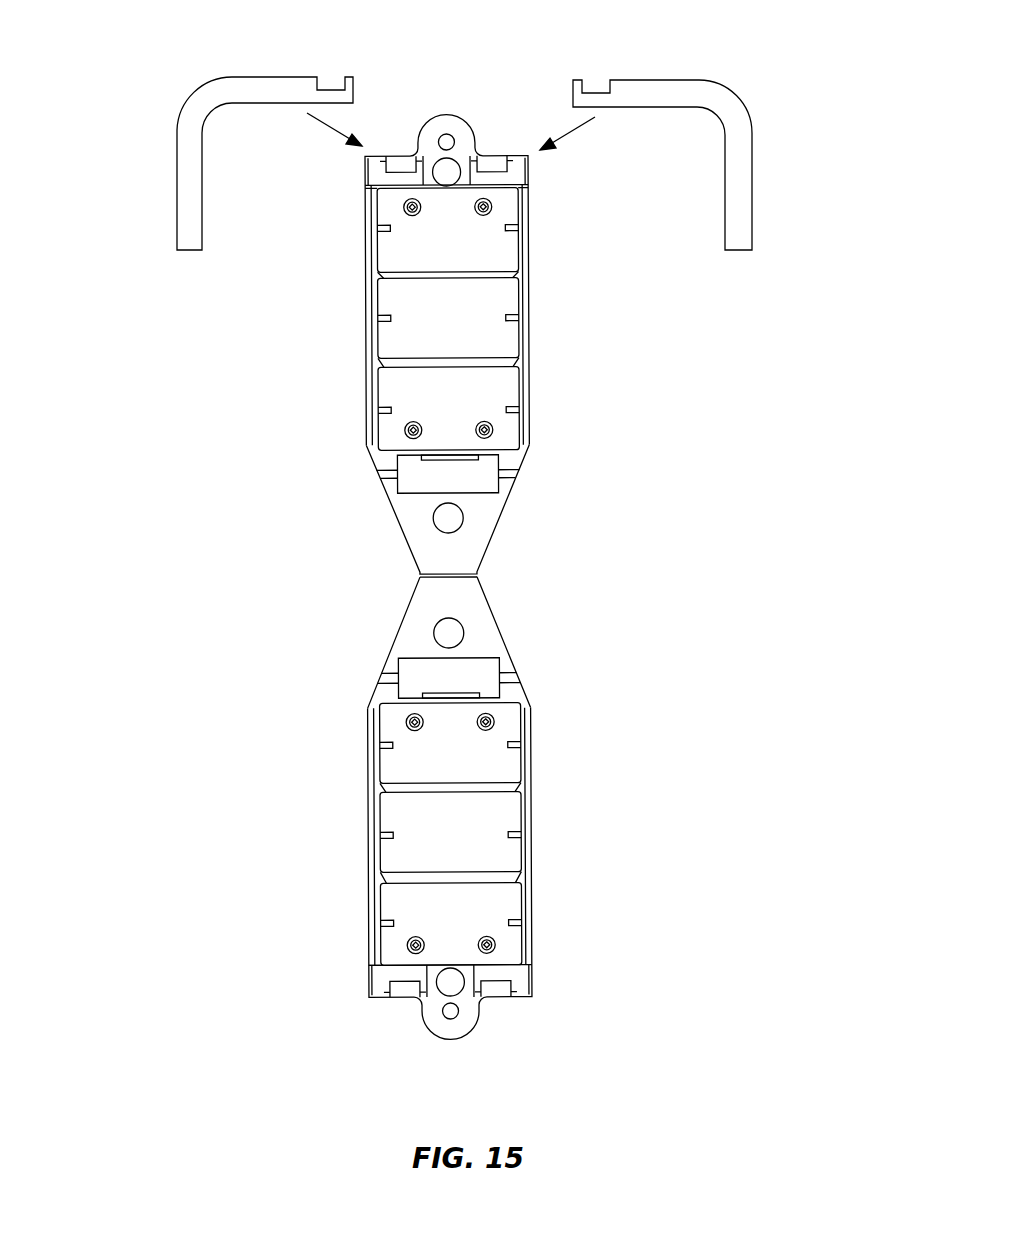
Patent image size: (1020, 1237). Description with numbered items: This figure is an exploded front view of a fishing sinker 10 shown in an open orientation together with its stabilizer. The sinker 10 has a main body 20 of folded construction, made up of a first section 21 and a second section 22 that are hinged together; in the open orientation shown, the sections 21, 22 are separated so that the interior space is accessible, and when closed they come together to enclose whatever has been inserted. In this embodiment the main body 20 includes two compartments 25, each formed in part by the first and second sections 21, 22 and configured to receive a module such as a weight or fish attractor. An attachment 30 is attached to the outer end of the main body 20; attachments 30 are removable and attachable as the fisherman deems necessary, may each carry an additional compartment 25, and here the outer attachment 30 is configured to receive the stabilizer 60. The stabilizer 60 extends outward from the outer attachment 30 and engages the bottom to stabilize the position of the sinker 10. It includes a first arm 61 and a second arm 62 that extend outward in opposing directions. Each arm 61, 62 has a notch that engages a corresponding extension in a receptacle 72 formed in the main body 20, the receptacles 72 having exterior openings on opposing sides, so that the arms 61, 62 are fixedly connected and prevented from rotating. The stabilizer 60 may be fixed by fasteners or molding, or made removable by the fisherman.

The sinker 10 is at (720, 515).
The main body 20 is at (333, 275).
The first section 21 is at (531, 747).
The second section 22 is at (528, 407).
The compartment 25 is at (503, 300).
The attachment 30 is at (333, 163).
The stabilizer 60 is at (722, 62).
The first arm 61 is at (743, 193).
The second arm 62 is at (185, 216).
The receptacle 72 is at (515, 163).